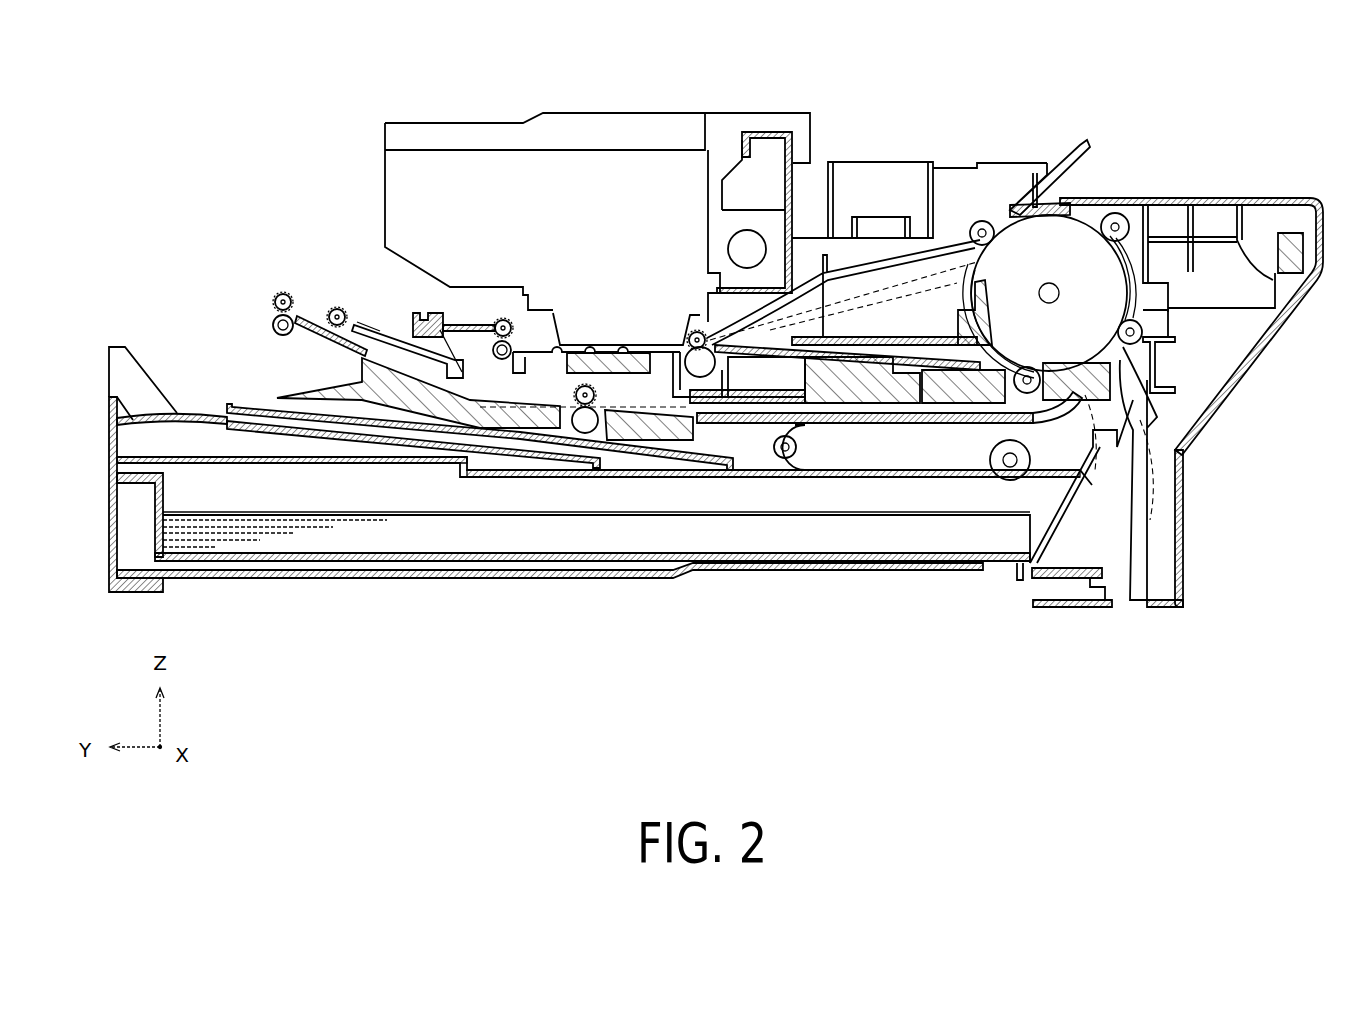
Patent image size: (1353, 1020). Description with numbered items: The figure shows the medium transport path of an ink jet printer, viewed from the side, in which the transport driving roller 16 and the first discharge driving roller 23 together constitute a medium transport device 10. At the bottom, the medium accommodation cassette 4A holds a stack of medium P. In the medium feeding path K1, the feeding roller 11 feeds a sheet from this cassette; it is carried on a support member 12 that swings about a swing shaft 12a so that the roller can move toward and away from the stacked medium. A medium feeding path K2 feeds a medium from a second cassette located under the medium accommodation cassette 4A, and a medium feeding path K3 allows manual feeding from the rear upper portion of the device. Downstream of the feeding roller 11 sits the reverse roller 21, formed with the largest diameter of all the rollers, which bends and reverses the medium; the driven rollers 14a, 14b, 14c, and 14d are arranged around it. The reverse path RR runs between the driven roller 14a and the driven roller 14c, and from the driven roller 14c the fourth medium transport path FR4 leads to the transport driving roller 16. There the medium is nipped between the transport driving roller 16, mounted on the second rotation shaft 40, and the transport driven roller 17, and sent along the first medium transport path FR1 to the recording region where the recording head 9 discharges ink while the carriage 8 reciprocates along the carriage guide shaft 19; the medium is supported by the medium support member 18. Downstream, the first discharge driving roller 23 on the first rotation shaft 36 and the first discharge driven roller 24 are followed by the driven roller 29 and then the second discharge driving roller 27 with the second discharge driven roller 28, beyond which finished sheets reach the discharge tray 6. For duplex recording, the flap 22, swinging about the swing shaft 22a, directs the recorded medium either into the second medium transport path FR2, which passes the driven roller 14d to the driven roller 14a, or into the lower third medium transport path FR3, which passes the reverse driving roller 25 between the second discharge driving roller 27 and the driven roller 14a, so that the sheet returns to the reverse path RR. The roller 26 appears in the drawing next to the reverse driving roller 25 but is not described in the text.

The medium accommodation cassette 4A is at (256, 598).
The medium P is at (405, 540).
The discharge tray 6 is at (200, 415).
The first rotation shaft 36 is at (545, 330).
The flap 22 is at (383, 340).
The swing shaft 22a is at (455, 330).
The second discharge driving roller 27 is at (272, 322).
The second discharge driven roller 28 is at (283, 292).
The driven roller 29 is at (337, 307).
The first discharge driven roller 24 is at (504, 318).
The first discharge driving roller 23 is at (502, 340).
The carriage 8 is at (583, 145).
The first medium transport path FR1 is at (575, 210).
The recording head 9 is at (597, 330).
The medium support member 18 is at (647, 352).
The transport driven roller 17 is at (695, 330).
The transport driving roller 16 is at (745, 288).
The carriage guide shaft 19 is at (790, 240).
The second rotation shaft 40 is at (752, 245).
The fourth medium transport path FR4 is at (840, 185).
The second medium transport path FR2 is at (895, 240).
The medium feeding path K3 is at (1085, 130).
The driven roller 14c is at (975, 224).
The reverse roller 21 is at (1020, 240).
The driven roller 14b is at (1120, 214).
The reverse path RR is at (1178, 198).
The driven roller 14a is at (1143, 345).
The driven roller 14d is at (1015, 395).
The medium transport device 10 is at (880, 105).
The support member 12 is at (883, 480).
The swing shaft 12a is at (785, 460).
The third medium transport path FR3 is at (838, 560).
The feeding roller 11 is at (1010, 482).
The reverse driving roller 25 is at (585, 408).
The roller 26 is at (598, 432).
The medium feeding path K2 is at (1155, 535).
The medium feeding path K1 is at (1115, 612).